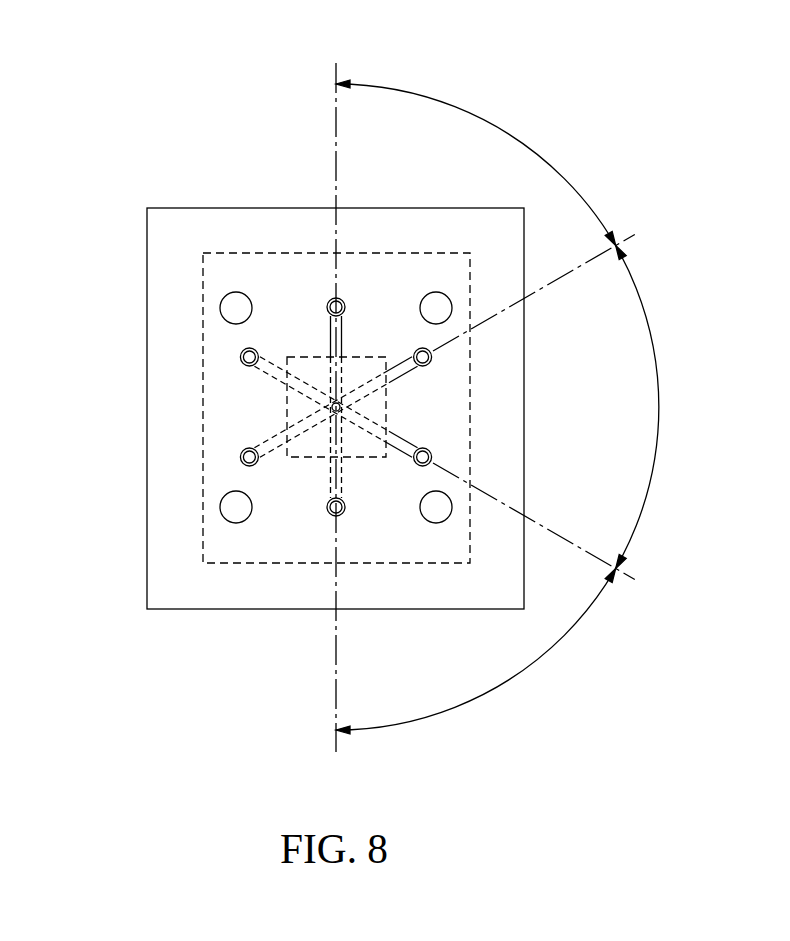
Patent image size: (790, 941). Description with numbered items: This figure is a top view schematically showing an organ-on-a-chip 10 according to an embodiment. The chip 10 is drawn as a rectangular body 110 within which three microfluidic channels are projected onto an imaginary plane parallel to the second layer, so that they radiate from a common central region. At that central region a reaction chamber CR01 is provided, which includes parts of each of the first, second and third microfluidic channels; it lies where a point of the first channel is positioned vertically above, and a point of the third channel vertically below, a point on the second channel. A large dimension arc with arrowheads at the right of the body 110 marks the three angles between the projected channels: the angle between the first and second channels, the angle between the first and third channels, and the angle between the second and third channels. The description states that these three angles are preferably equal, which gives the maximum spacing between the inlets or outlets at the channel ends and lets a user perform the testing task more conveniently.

The display device / antenna module 10 is at (650, 66).
The substrate 110 is at (238, 207).
The reaction chamber CR01 is at (332, 407).